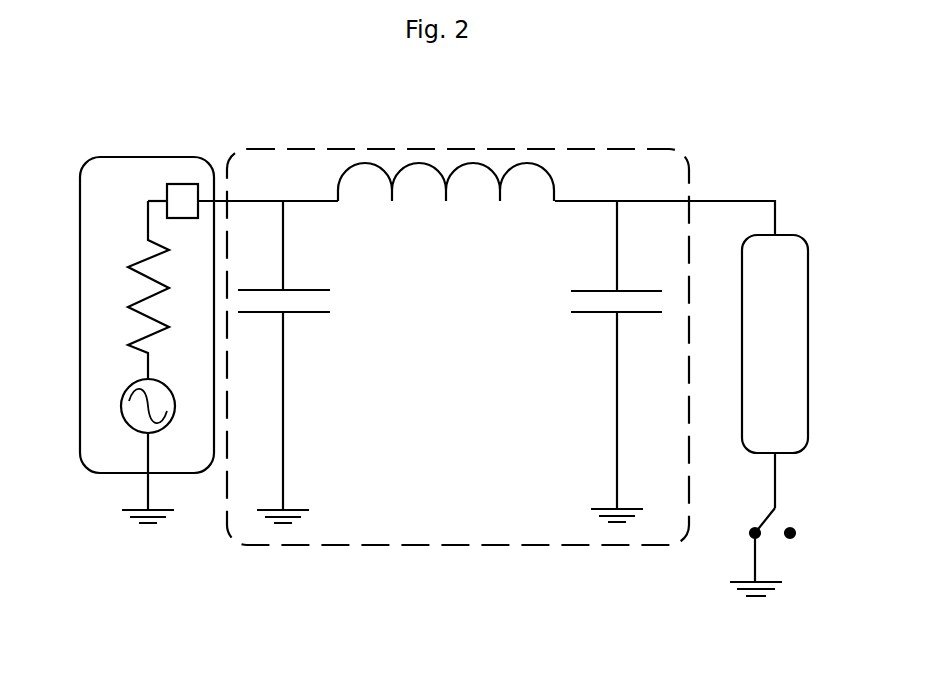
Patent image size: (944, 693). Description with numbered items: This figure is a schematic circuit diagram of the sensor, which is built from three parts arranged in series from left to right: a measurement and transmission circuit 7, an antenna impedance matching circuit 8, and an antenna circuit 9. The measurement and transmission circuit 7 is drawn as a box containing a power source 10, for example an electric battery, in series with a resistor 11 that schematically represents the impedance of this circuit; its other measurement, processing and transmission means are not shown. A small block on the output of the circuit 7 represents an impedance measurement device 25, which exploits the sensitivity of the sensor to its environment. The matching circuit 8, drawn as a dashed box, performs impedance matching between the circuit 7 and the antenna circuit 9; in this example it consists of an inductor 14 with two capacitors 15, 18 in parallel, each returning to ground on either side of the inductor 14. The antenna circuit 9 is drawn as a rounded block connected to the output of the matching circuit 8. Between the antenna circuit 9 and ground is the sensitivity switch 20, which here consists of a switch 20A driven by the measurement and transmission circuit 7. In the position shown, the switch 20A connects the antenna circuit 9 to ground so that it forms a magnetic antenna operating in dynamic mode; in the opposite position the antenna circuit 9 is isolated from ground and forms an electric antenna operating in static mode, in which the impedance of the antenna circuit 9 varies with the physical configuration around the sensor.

The measurement and transmission circuit 7 is at (145, 157).
The impedance measurement device 25 is at (182, 203).
The resistor 11 is at (137, 260).
The power source 10 is at (172, 430).
The capacitor 15 is at (260, 288).
The inductor 14 is at (420, 163).
The antenna impedance matching circuit 8 is at (547, 148).
The capacitor 18 is at (642, 290).
The antenna circuit 9 is at (790, 253).
The switch 20A is at (768, 517).
The sensitivity switch 20 is at (783, 550).